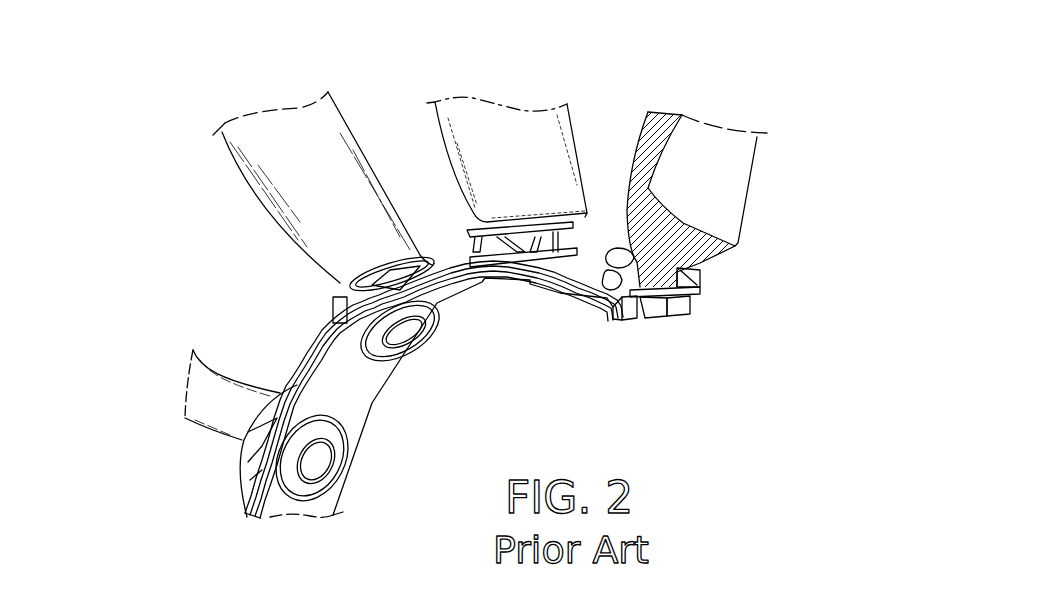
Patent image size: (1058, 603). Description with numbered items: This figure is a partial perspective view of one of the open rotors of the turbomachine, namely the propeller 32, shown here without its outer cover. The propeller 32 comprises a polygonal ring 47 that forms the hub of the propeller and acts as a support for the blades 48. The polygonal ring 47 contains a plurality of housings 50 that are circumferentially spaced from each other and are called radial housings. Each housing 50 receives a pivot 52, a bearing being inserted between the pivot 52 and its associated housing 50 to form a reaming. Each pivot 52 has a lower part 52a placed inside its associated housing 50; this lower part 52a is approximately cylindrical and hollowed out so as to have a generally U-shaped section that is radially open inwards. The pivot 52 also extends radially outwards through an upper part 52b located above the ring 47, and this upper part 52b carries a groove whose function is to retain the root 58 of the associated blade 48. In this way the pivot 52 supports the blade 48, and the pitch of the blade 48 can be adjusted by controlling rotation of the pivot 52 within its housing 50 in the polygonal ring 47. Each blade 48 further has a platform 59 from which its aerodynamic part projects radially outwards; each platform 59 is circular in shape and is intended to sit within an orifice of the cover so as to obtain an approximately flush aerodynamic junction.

The propeller 32 is at (689, 175).
The blade 48 is at (712, 203).
The polygonal ring 47 is at (363, 402).
The pivot 52 is at (700, 292).
The lower part 52a is at (437, 327).
The upper part 52b is at (603, 310).
The housing 50 is at (640, 313).
The root 58 is at (630, 250).
The platform 59 is at (343, 303).